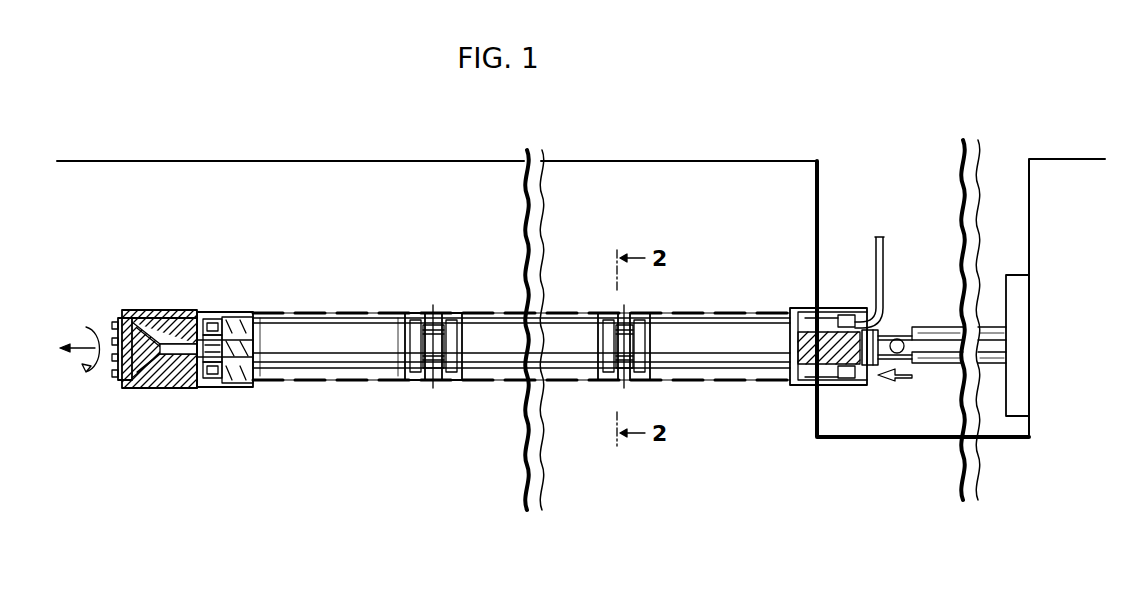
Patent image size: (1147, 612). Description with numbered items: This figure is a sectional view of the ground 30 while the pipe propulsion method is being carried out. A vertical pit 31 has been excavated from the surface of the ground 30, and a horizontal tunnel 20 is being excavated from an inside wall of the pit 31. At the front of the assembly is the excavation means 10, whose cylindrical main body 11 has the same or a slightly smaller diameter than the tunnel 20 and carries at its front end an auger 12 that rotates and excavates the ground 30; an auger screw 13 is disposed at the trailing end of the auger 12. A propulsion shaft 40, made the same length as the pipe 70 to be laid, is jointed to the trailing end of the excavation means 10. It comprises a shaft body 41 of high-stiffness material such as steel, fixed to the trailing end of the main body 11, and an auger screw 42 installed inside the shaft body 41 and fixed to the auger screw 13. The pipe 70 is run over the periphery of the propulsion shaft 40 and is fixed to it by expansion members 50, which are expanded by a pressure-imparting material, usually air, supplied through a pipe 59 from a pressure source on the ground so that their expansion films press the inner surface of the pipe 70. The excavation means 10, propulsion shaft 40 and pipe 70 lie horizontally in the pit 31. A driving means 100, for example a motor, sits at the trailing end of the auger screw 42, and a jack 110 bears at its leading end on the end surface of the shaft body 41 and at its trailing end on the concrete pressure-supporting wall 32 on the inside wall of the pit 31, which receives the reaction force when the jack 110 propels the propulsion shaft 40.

The excavation means 10 is at (156, 390).
The cylindrical main body 11 is at (166, 309).
The auger 12 is at (112, 322).
The auger screw 13 is at (178, 360).
The tunnel 20 is at (300, 372).
The ground 30 is at (392, 234).
The pit 31 is at (818, 173).
The pressure-supporting wall 32 is at (1018, 379).
The propulsion shaft 40 is at (228, 309).
The shaft body 41 is at (245, 309).
The auger screw 42 is at (232, 350).
The expansion member 50 is at (368, 360).
The pipe 59 is at (885, 258).
The pipe 70 is at (600, 382).
The driving means 100 is at (907, 346).
The jack 110 is at (953, 366).